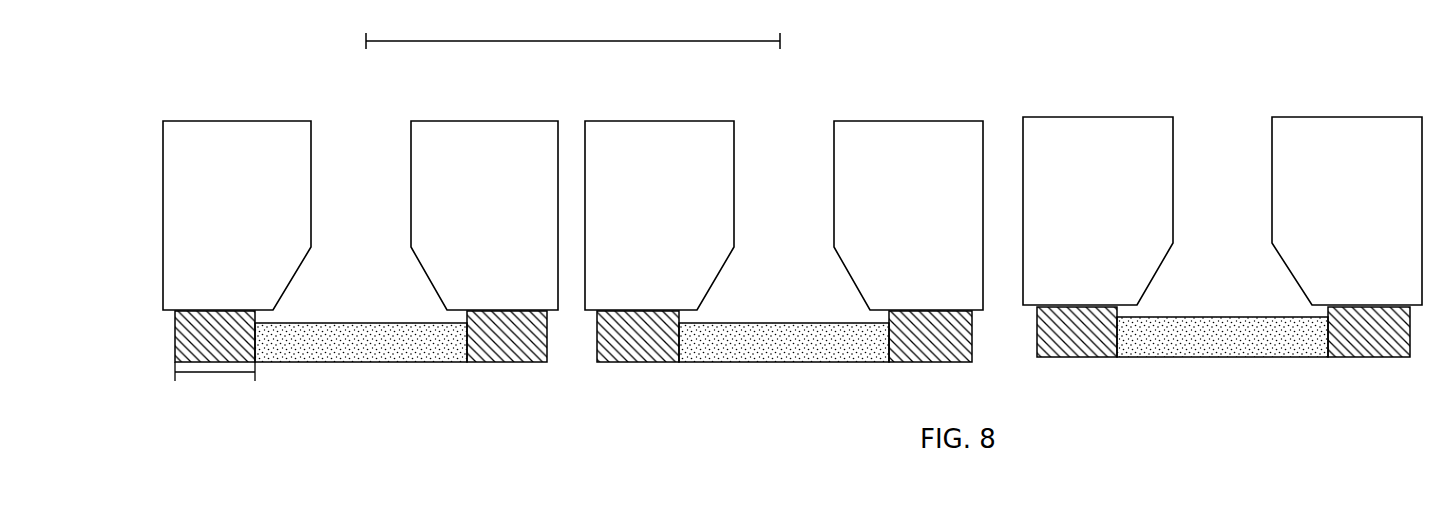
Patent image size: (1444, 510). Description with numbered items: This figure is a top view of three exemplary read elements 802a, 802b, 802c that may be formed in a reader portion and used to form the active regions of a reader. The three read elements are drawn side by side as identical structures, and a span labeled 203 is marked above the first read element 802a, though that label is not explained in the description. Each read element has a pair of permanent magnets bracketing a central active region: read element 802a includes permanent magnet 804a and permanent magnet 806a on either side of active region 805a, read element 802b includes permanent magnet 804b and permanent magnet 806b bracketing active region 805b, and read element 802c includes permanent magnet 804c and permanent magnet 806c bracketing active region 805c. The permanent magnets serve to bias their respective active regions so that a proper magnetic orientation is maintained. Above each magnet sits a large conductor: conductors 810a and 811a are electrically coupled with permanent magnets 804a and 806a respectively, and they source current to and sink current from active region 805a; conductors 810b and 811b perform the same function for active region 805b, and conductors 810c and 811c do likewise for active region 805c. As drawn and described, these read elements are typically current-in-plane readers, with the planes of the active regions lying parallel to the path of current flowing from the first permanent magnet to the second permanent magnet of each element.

The pitch / spacing dimension 203 is at (570, 41).
The read element 802a is at (385, 122).
The read element 802b is at (804, 114).
The read element 802c is at (1236, 130).
The conductor 810a is at (208, 208).
The conductor 811a is at (476, 191).
The permanent magnet 804a is at (227, 373).
The active region 805a is at (362, 362).
The permanent magnet 806a is at (508, 362).
The conductor 810b is at (631, 215).
The conductor 811b is at (899, 198).
The permanent magnet 804b is at (638, 362).
The active region 805b is at (783, 362).
The permanent magnet 806b is at (932, 362).
The conductor 810c is at (1069, 213).
The conductor 811c is at (1338, 198).
The permanent magnet 804c is at (1078, 357).
The active region 805c is at (1222, 357).
The permanent magnet 806c is at (1370, 357).